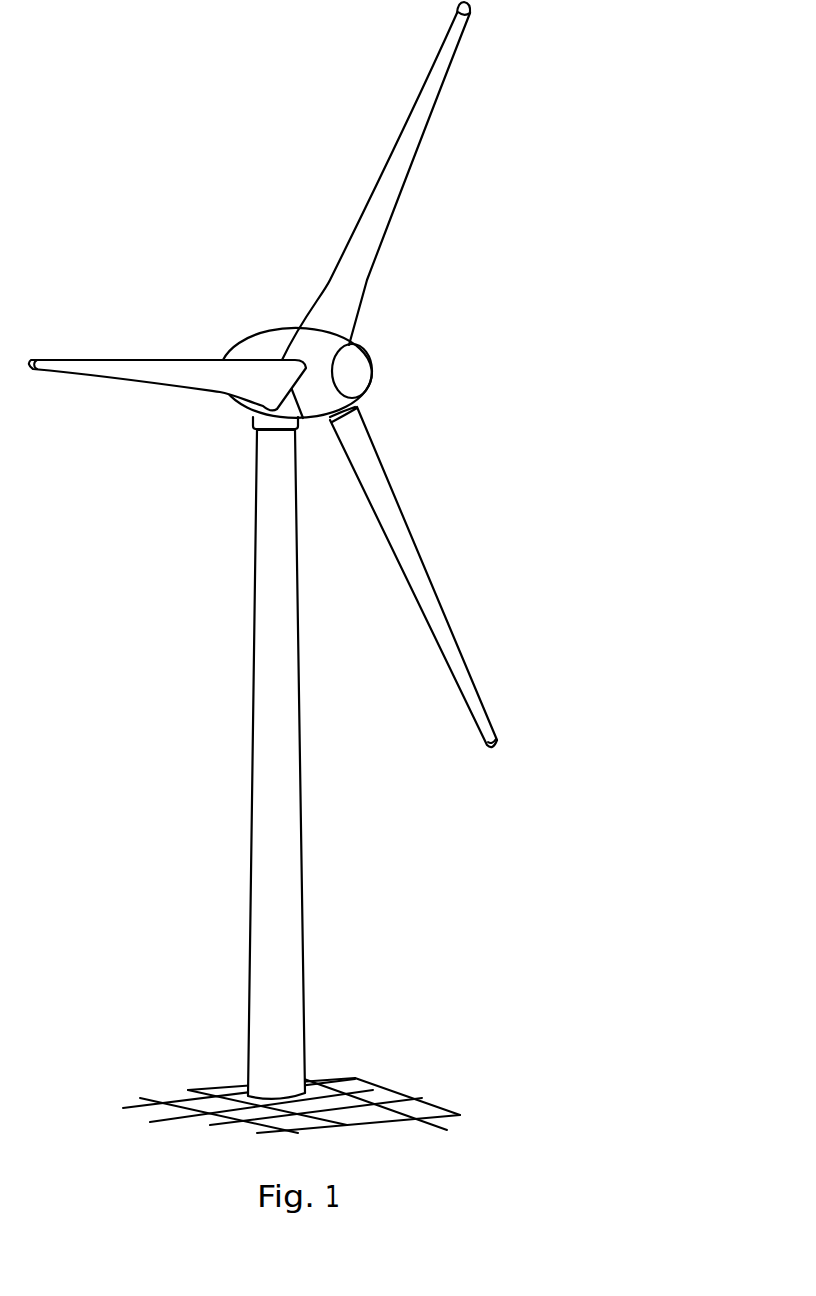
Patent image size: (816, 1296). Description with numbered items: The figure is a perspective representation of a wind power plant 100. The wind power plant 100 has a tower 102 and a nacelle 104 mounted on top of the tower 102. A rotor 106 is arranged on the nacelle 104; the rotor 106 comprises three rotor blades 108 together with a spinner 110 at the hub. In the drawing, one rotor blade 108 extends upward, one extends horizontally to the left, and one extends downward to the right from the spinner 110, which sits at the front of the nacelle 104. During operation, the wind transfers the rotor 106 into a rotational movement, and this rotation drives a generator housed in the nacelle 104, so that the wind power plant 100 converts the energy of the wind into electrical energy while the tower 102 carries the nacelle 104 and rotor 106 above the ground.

The wind power plant 100 is at (204, 509).
The tower 102 is at (283, 863).
The nacelle 104 is at (268, 343).
The rotor 106 is at (451, 285).
The rotor blades 108 is at (418, 128).
The spinner 110 is at (357, 372).